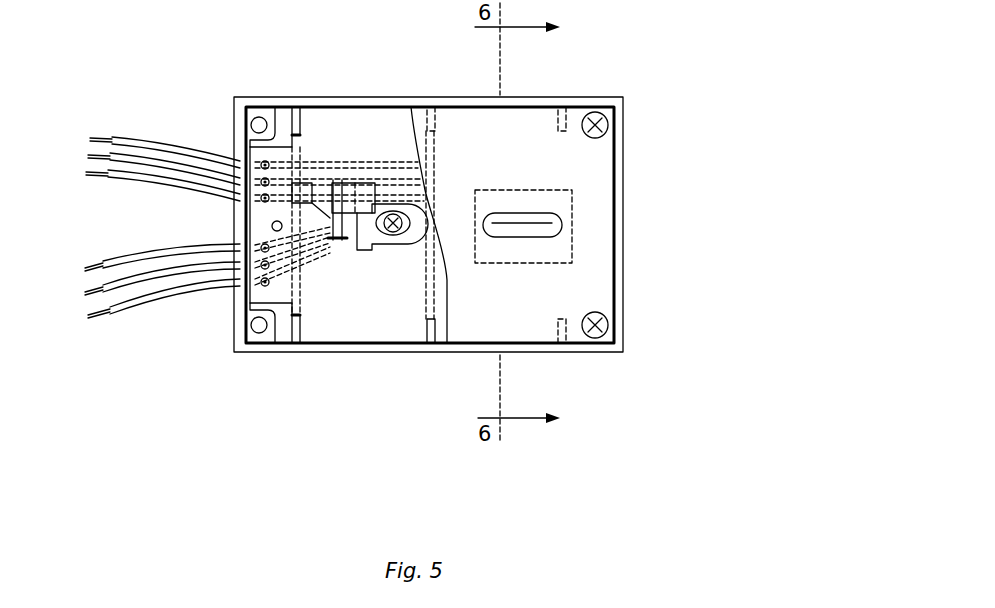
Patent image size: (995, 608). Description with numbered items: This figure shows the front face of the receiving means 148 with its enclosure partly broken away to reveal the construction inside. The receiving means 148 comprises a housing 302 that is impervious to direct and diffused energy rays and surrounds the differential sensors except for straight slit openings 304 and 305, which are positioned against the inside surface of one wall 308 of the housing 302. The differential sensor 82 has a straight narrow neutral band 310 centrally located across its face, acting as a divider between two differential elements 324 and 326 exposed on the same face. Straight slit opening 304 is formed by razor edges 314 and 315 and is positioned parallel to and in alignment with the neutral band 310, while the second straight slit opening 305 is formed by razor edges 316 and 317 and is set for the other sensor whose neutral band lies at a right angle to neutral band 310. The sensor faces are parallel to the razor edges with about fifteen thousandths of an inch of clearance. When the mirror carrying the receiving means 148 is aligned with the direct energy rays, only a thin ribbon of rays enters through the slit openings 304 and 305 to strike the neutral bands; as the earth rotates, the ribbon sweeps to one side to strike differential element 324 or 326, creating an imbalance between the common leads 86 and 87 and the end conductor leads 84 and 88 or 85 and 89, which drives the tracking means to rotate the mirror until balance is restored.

The differential sensor 82 is at (333, 245).
The end conductor lead 84 is at (85, 293).
The end conductor lead 85 is at (88, 157).
The common lead 86 is at (85, 270).
The common lead 87 is at (90, 140).
The end conductor lead 88 is at (88, 316).
The end conductor lead 89 is at (86, 174).
The receiving means 148 is at (592, 397).
The housing 302 is at (562, 353).
The straight slit opening 304 is at (334, 180).
The straight slit opening 305 is at (562, 221).
The wall 308 is at (583, 279).
The neutral band 310 is at (328, 232).
The razor edge 314 is at (332, 180).
The razor edge 315 is at (345, 180).
The razor edge 316 is at (555, 212).
The razor edge 317 is at (540, 232).
The differential element 324 is at (332, 213).
The differential element 326 is at (348, 245).